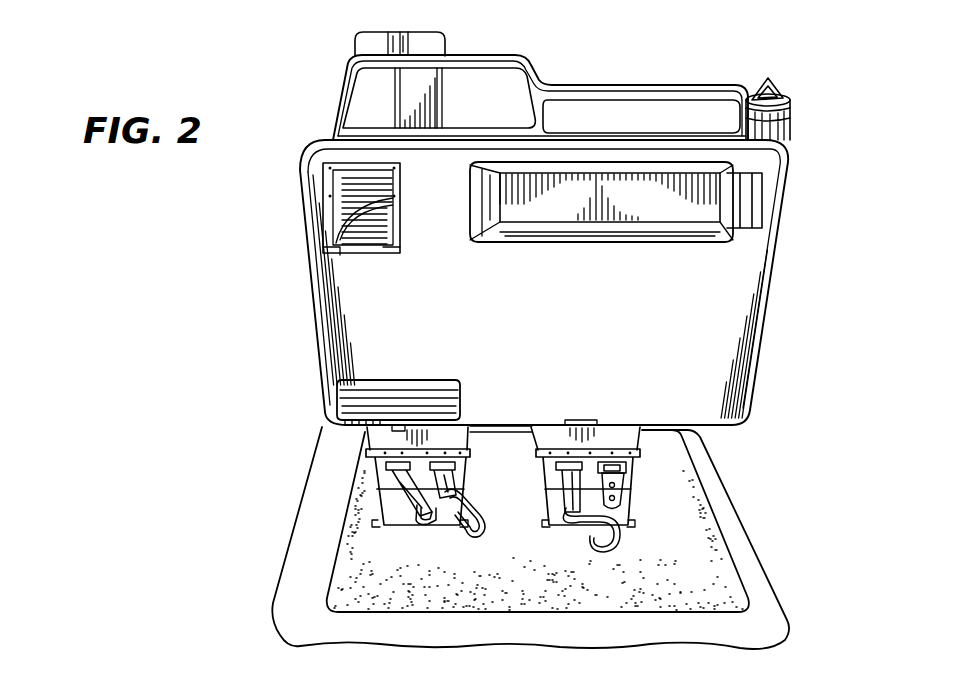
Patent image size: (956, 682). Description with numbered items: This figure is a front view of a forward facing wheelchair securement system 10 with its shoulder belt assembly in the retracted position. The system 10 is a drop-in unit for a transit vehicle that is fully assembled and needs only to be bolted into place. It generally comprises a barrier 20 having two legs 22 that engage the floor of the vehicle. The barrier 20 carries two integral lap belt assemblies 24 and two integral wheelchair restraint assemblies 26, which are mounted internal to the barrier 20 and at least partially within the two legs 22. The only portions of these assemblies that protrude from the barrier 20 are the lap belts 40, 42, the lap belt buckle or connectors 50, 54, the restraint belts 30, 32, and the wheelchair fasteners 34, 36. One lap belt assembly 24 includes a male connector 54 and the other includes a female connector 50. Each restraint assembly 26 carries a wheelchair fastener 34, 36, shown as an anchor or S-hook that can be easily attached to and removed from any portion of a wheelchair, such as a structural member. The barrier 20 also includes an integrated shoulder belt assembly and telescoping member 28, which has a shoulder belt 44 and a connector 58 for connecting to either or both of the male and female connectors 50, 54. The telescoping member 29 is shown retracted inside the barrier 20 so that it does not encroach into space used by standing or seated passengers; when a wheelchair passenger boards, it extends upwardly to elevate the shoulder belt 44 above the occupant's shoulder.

The wheelchair securement system 10 is at (266, 352).
The barrier 20 is at (556, 323).
The legs 22 is at (383, 437).
The lap belt assemblies 24 is at (352, 468).
The wheelchair restraint assemblies 26 is at (544, 424).
The shoulder belt assembly and telescoping member 28 is at (810, 110).
The telescoping member 29 is at (790, 136).
The restraint belt 30 is at (450, 476).
The restraint belt 32 is at (560, 473).
The wheelchair fastener 34 is at (471, 527).
The wheelchair fastener 36 is at (613, 543).
The lap belt 40 is at (405, 488).
The lap belt 42 is at (626, 469).
The shoulder belt 44 is at (792, 74).
The female connector 50 is at (411, 522).
The male connector 54 is at (625, 489).
The connector 58 is at (768, 80).